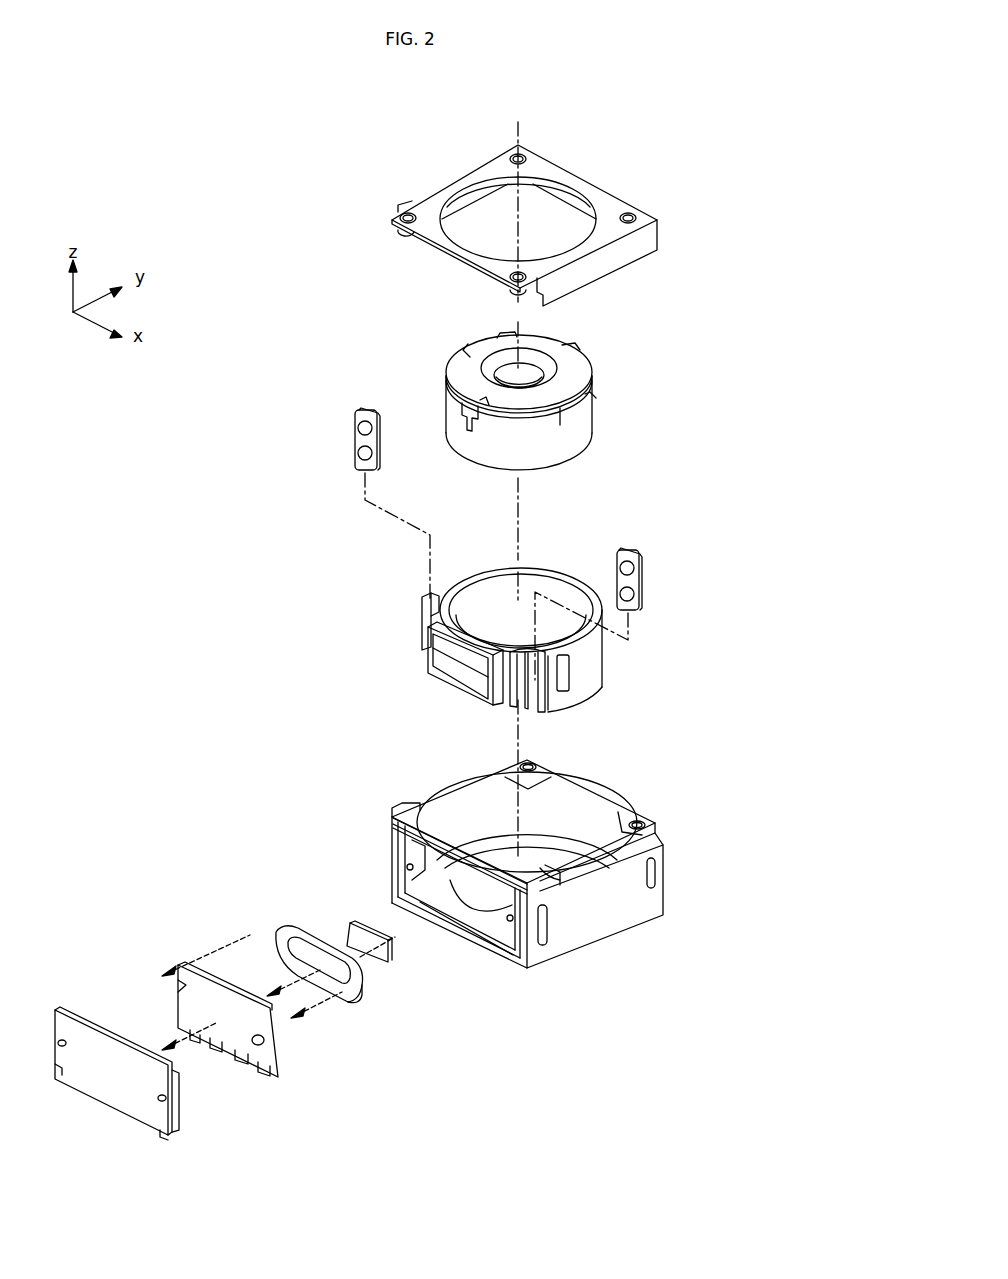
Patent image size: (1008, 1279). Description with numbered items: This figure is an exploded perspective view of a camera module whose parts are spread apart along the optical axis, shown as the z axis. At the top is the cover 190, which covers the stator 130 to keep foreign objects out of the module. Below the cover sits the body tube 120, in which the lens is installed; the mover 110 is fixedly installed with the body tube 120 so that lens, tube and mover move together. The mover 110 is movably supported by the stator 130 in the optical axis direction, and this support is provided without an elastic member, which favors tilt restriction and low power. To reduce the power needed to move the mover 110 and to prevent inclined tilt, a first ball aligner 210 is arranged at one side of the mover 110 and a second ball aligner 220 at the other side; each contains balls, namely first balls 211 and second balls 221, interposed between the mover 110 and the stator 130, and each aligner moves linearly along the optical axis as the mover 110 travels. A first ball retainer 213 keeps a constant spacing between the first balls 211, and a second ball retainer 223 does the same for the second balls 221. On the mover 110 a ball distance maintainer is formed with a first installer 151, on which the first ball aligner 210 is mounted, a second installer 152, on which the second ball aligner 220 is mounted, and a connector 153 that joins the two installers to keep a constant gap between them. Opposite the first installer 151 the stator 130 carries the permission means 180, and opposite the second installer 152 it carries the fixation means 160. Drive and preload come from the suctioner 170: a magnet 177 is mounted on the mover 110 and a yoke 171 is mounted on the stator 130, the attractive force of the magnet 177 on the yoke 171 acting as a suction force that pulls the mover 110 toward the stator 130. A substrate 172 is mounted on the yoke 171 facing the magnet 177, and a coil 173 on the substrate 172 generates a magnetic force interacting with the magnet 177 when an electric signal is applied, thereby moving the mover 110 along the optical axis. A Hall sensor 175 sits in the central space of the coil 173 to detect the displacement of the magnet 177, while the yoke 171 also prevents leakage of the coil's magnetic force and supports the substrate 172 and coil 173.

The mover 110 is at (512, 654).
The body tube 120 is at (580, 430).
The stator 130 is at (542, 867).
The first installer 151 is at (430, 612).
The second installer 152 is at (545, 695).
The connector 153 is at (460, 650).
The fixation means 160 is at (558, 875).
The suctioner 170 is at (225, 1017).
The yoke 171 is at (93, 1043).
The substrate 172 is at (205, 990).
The coil 173 is at (280, 940).
The Hall sensor 175 is at (350, 930).
The magnet 177 is at (465, 662).
The permission means 180 is at (435, 818).
The cover 190 is at (440, 188).
The first ball aligner 210 is at (308, 431).
The first ball 211 is at (362, 453).
The first ball retainer 213 is at (357, 414).
The second ball aligner 220 is at (692, 574).
The second ball 221 is at (634, 595).
The second ball retainer 223 is at (634, 568).